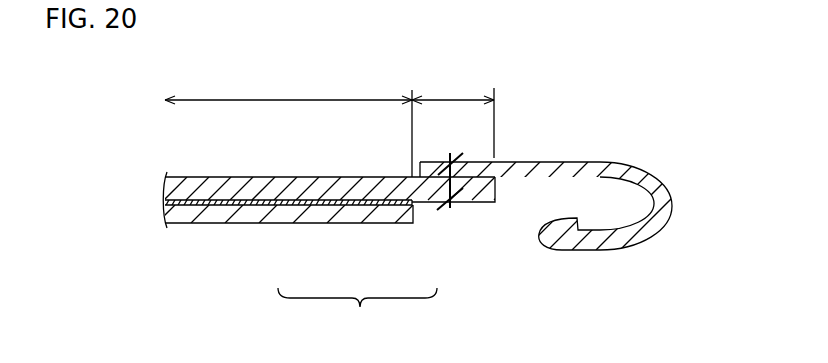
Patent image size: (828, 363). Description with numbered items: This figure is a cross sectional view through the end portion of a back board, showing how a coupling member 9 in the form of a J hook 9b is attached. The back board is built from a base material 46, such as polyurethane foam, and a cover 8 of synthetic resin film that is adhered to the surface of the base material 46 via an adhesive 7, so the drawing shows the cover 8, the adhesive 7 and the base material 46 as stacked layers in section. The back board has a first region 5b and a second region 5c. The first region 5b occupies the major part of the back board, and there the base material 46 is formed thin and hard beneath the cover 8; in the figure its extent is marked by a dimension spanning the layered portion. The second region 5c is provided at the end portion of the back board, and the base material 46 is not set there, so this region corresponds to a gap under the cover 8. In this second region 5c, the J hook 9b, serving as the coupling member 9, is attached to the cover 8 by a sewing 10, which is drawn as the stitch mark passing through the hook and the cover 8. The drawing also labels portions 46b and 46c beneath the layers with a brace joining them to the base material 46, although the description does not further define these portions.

The first region 5b is at (288, 123).
The second region 5c is at (453, 115).
The adhesive 7 is at (293, 203).
The cover 8 is at (228, 177).
The coupling member 9 is at (521, 136).
The J hook 9b is at (567, 162).
The sewing 10 is at (445, 195).
The base material 46 is at (357, 311).
The base member first portion 46b is at (327, 218).
The base member second portion 46c is at (432, 204).